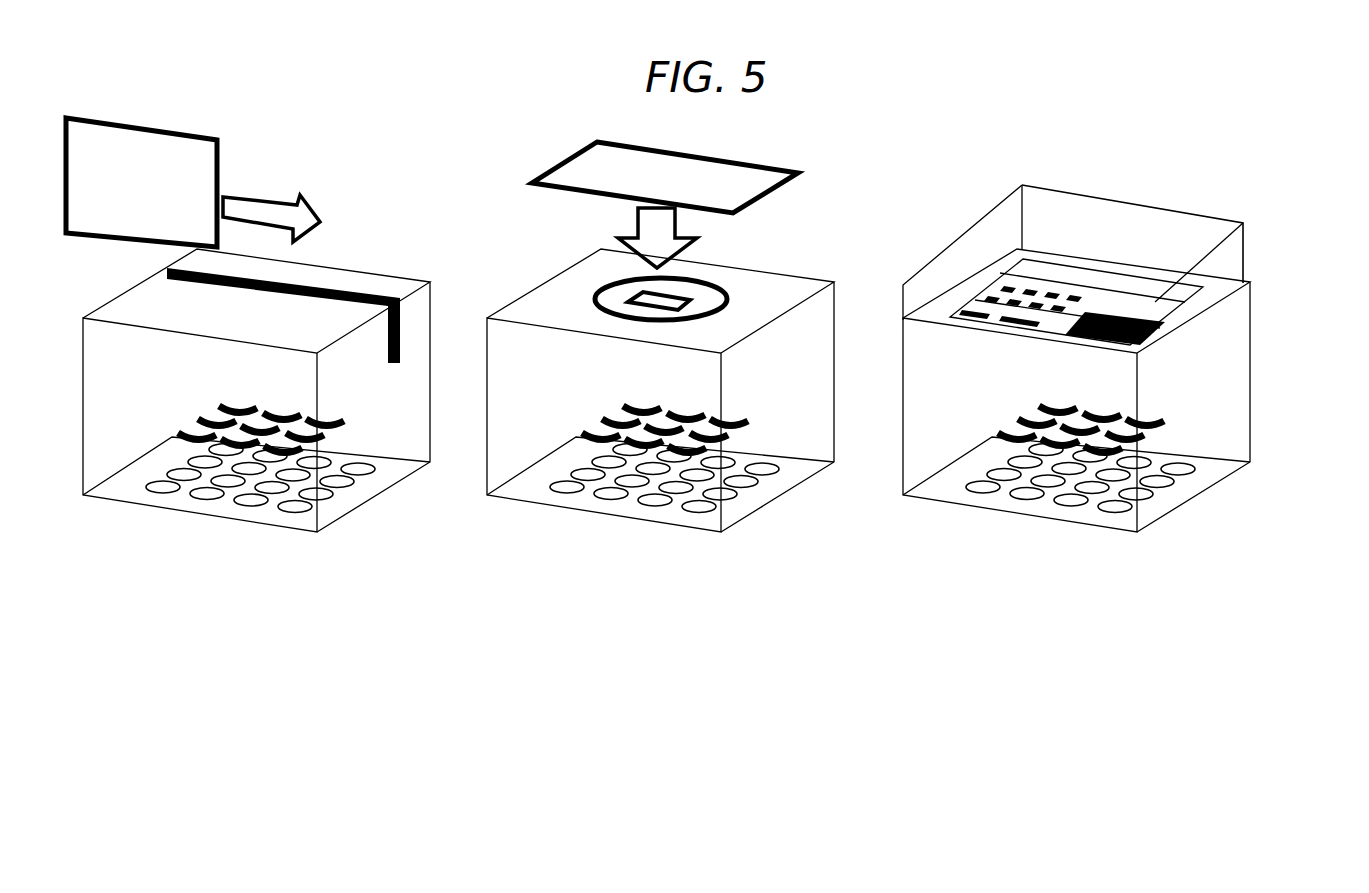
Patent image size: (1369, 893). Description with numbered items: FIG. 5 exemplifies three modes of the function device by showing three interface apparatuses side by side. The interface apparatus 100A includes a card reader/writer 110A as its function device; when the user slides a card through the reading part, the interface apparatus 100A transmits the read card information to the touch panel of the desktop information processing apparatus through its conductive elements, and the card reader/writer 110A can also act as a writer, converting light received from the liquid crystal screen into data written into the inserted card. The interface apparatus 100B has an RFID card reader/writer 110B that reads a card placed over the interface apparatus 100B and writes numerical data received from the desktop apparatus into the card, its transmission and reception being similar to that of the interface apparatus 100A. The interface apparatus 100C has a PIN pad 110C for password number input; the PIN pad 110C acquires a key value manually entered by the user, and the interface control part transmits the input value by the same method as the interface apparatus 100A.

The interface apparatus 100A is at (397, 385).
The card reader/writer 110A is at (360, 292).
The interface apparatus 100B is at (793, 342).
The RFID card reader/writer 110B is at (712, 300).
The interface apparatus 100C is at (1198, 360).
The PIN pad 110C is at (1215, 262).